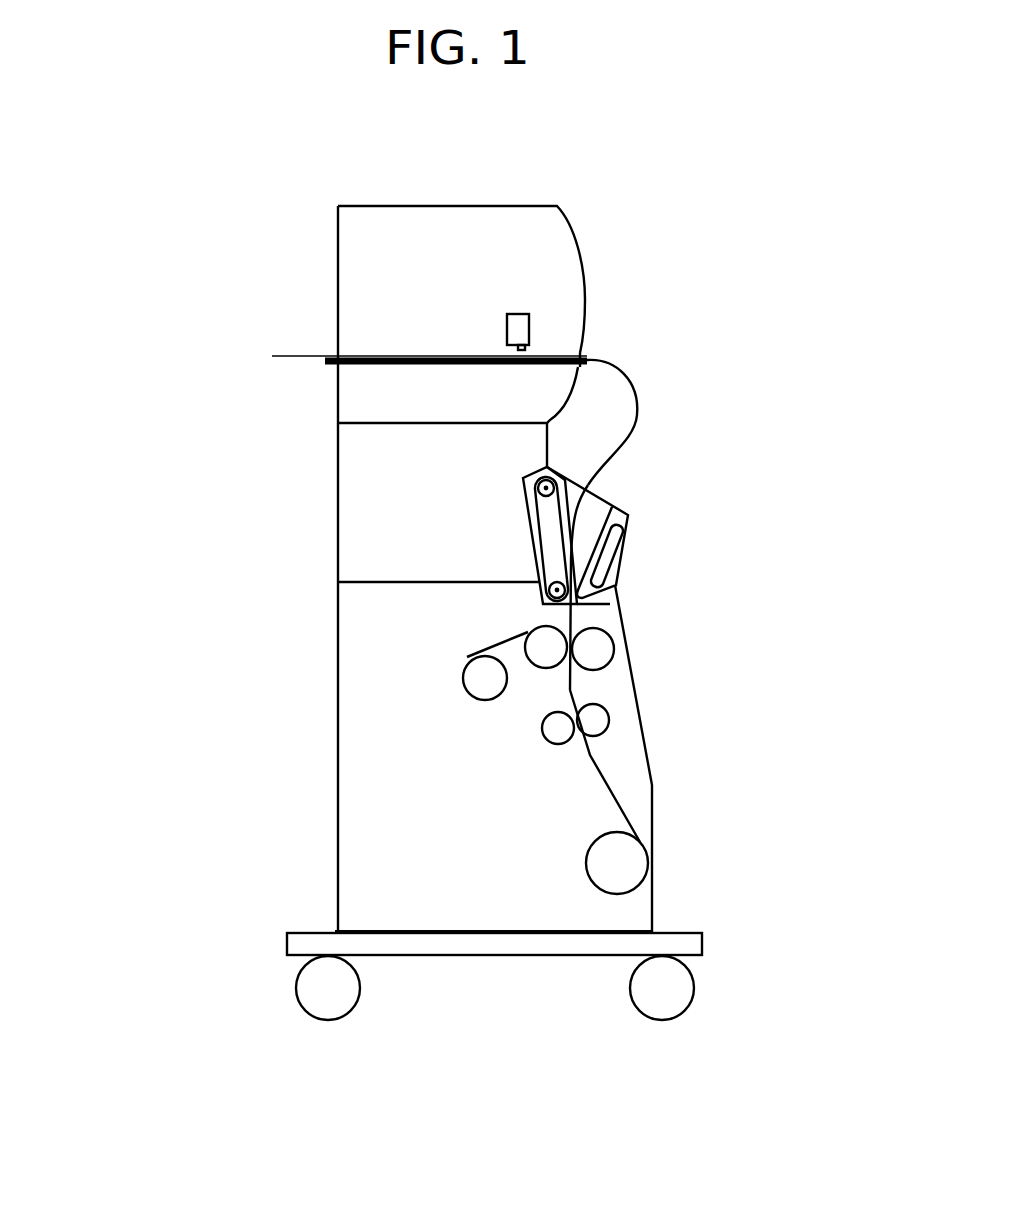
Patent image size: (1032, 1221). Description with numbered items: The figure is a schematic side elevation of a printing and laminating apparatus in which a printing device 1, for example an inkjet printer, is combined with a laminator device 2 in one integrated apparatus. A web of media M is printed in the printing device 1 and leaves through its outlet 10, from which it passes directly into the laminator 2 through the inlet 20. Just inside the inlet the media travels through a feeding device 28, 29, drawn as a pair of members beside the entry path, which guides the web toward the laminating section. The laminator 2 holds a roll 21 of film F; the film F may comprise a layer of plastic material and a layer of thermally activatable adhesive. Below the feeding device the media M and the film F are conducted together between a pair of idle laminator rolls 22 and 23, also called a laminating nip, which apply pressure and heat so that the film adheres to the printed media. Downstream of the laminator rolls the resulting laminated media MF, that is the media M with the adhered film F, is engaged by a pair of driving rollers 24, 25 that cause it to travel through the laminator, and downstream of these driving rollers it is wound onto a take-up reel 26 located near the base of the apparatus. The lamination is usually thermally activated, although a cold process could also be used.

The printing device 1 is at (390, 252).
The laminator device 2 is at (405, 892).
The outlet 10 is at (590, 352).
The media M is at (300, 357).
The film F is at (552, 643).
The laminated media MF is at (620, 810).
The inlet 20 is at (578, 623).
The roll of film 21 is at (482, 683).
The idle laminator roll 22 is at (527, 632).
The idle laminator roll 23 is at (598, 650).
The driving roller 24 is at (560, 732).
The driving roller 25 is at (597, 722).
The take-up reel 26 is at (620, 868).
The feeding device 28 is at (548, 522).
The feeding device 29 is at (627, 532).